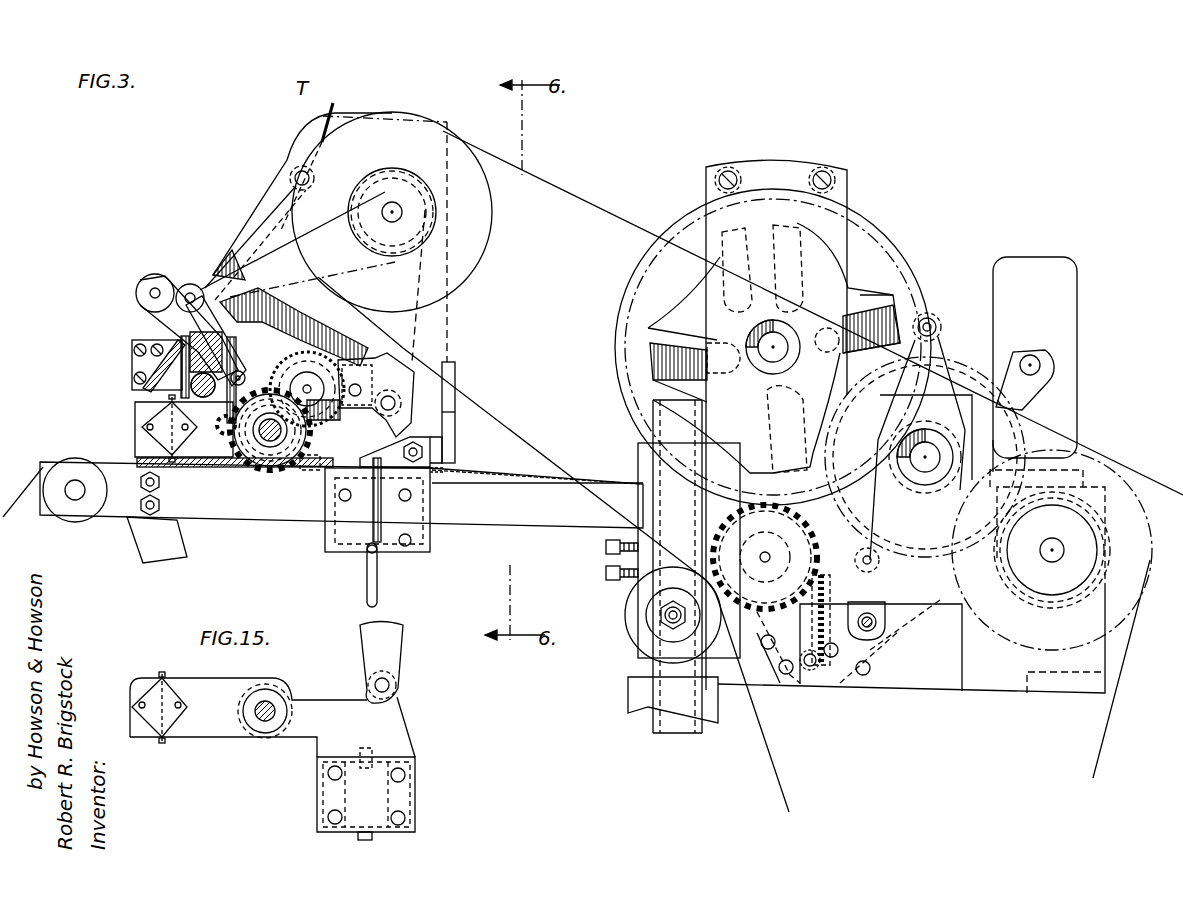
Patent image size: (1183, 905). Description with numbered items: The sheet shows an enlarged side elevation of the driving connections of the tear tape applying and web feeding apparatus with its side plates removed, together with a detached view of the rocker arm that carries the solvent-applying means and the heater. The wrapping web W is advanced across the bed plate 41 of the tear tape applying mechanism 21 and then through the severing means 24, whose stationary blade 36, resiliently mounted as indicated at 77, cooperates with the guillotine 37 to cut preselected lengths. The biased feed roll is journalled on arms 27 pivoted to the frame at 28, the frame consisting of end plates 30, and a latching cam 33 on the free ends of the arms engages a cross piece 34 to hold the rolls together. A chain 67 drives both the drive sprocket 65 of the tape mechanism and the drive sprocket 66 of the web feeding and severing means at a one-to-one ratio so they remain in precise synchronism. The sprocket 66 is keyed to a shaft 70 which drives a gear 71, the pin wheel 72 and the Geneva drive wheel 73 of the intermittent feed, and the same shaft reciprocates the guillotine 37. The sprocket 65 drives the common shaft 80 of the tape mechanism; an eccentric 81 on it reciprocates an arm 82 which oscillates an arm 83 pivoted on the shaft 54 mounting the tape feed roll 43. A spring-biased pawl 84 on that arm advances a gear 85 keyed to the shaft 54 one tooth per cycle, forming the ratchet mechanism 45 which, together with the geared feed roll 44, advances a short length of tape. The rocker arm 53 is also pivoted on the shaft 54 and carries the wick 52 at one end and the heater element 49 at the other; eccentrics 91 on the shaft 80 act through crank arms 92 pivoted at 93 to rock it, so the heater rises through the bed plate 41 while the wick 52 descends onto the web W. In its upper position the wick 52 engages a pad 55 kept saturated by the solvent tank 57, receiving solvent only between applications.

In FIG. 3, the wrapping material web W is at (80, 465).
In FIG. 3, the tear tape applying mechanism 21 is at (478, 277).
In FIG. 3, the severing means 24 is at (921, 682).
In FIG. 3, the arms 27 is at (1008, 355).
In FIG. 3, the pivot 28 is at (885, 615).
In FIG. 3, the end plates 30 is at (930, 688).
In FIG. 3, the latching cam 33 is at (1070, 305).
In FIG. 3, the cross piece 34 is at (1073, 470).
In FIG. 3, the stationary blade 36 is at (808, 672).
In FIG. 3, the guillotine 37 is at (855, 645).
In FIG. 3, the bed plate 41 is at (222, 470).
In FIG. 3, the tape feed roll 43 is at (222, 432).
In FIG. 3, the tape feed roll 44 is at (305, 375).
In FIG. 3, the ratchet mechanism 45 is at (238, 358).
In FIG. 3, the heater element 49 is at (432, 497).
In FIG. 15, the heater element 49 is at (415, 772).
In FIG. 3, the wick 52 is at (165, 395).
In FIG. 15, the wick 52 is at (162, 672).
In FIG. 3, the rocker arm 53 is at (140, 427).
In FIG. 15, the rocker arm 53 is at (222, 692).
In FIG. 3, the shaft 54 is at (270, 445).
In FIG. 15, the shaft 54 is at (270, 697).
In FIG. 3, the pad 55 is at (150, 395).
In FIG. 3, the solvent tank 57 is at (132, 364).
In FIG. 3, the drive sprocket 65 is at (493, 232).
In FIG. 3, the drive sprocket 66 is at (1015, 647).
In FIG. 3, the chain 67 is at (1100, 760).
In FIG. 3, the shaft 70 is at (1052, 538).
In FIG. 3, the gear 71 is at (1000, 580).
In FIG. 3, the pin wheel 72 is at (940, 350).
In FIG. 3, the Geneva drive wheel 73 is at (863, 296).
In FIG. 3, the resilient mounting 77 is at (762, 610).
In FIG. 3, the shaft 80 is at (394, 207).
In FIG. 3, the eccentric 81 is at (352, 238).
In FIG. 3, the arm 82 is at (214, 282).
In FIG. 3, the arm 83 is at (195, 333).
In FIG. 3, the spring-biased pawl 84 is at (246, 376).
In FIG. 3, the gear 85 is at (314, 452).
In FIG. 3, the eccentrics 91 is at (416, 196).
In FIG. 3, the crank arms 92 is at (375, 360).
In FIG. 15, the crank arms 92 is at (398, 658).
In FIG. 3, the pivot 93 is at (390, 396).
In FIG. 15, the pivot 93 is at (390, 685).